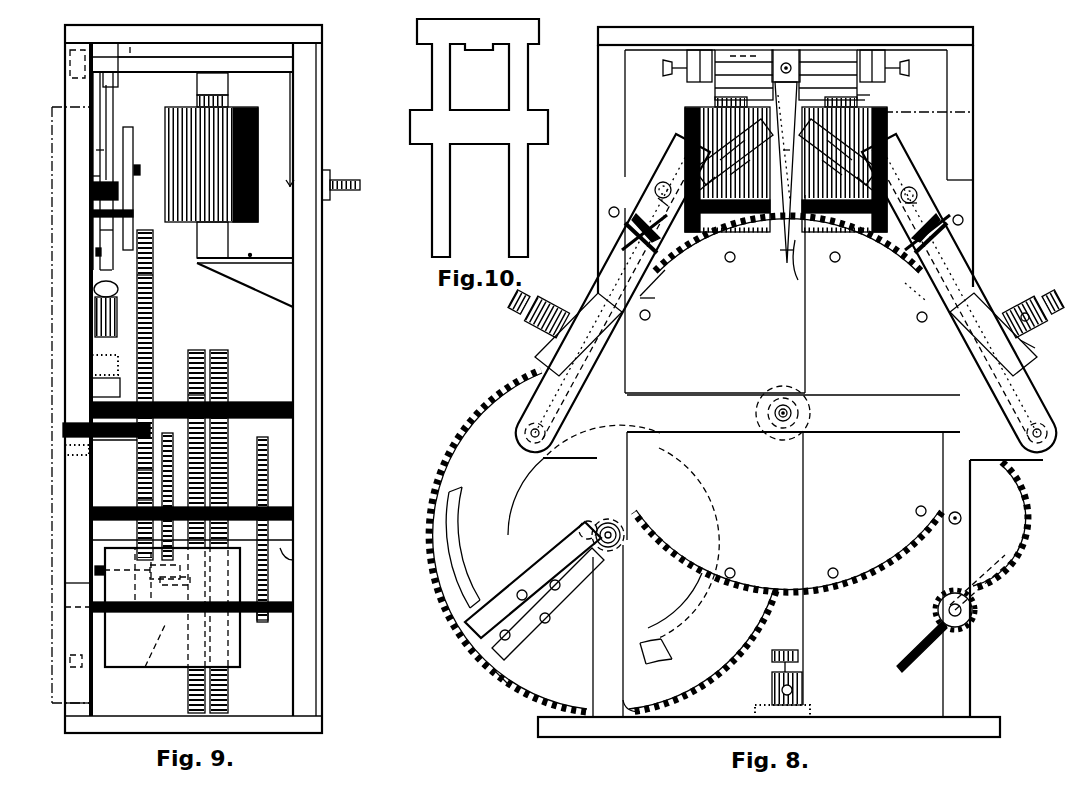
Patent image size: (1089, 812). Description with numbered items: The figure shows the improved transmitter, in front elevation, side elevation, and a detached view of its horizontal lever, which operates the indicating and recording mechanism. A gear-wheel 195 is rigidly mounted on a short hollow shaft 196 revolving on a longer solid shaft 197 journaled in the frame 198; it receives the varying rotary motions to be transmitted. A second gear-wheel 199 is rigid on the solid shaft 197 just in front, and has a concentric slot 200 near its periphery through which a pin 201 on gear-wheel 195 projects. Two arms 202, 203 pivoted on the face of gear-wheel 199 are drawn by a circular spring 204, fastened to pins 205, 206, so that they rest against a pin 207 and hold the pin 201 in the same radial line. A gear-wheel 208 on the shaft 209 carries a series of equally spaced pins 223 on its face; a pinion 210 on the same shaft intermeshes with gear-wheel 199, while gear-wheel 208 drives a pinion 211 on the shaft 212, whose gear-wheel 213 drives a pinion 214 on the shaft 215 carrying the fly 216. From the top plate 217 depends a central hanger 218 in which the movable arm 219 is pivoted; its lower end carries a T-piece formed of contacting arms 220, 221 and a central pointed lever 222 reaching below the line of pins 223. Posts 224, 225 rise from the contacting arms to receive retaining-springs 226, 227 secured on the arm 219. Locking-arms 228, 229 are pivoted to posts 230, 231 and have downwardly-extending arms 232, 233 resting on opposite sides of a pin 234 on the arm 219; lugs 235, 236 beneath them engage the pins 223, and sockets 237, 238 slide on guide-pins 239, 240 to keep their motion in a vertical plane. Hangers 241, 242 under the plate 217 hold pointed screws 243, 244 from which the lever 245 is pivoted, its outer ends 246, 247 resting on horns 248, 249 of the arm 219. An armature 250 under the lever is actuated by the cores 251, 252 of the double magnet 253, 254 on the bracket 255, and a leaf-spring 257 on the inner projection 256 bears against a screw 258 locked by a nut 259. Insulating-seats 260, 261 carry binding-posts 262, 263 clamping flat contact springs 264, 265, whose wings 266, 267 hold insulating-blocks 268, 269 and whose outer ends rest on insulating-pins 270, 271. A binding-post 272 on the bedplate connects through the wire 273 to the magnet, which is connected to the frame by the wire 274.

In FIG. 9, the gear-wheel 195 is at (229, 366).
In FIG. 9, the short hollow shaft 196 is at (293, 560).
In FIG. 9, the solid shaft 197 is at (100, 545).
In FIG. 9, the frame 198 is at (316, 535).
In FIG. 8, the frame 198 is at (960, 185).
In FIG. 9, the gear-wheel 199 is at (188, 366).
In FIG. 8, the gear-wheel 199 is at (427, 590).
In FIG. 8, the concentric slot 200 is at (460, 515).
In FIG. 9, the pin 201 is at (144, 652).
In FIG. 8, the pin 201 is at (490, 655).
In FIG. 8, the arm 202 is at (500, 680).
In FIG. 8, the arm 203 is at (480, 640).
In FIG. 9, the circular spring 204 is at (162, 437).
In FIG. 8, the circular spring 204 is at (508, 537).
In FIG. 8, the pin 205 is at (545, 622).
In FIG. 8, the pin 206 is at (518, 594).
In FIG. 9, the pin 207 is at (240, 563).
In FIG. 8, the pin 207 is at (552, 580).
In FIG. 9, the gear-wheel 208 is at (155, 280).
In FIG. 8, the gear-wheel 208 is at (788, 544).
In FIG. 9, the shaft 209 is at (242, 404).
In FIG. 8, the shaft 209 is at (786, 425).
In FIG. 9, the pinion 210 is at (188, 393).
In FIG. 8, the pinion 210 is at (775, 392).
In FIG. 9, the pinion 211 is at (137, 505).
In FIG. 8, the pinion 211 is at (962, 518).
In FIG. 8, the shaft 212 is at (960, 522).
In FIG. 9, the gear-wheel 213 is at (257, 488).
In FIG. 8, the gear-wheel 213 is at (1000, 525).
In FIG. 9, the pinion 214 is at (255, 622).
In FIG. 8, the pinion 214 is at (975, 600).
In FIG. 9, the shaft 215 is at (293, 605).
In FIG. 8, the shaft 215 is at (935, 610).
In FIG. 9, the fly 216 is at (172, 607).
In FIG. 8, the fly 216 is at (906, 670).
In FIG. 9, the top plate 217 is at (193, 35).
In FIG. 8, the top plate 217 is at (970, 38).
In FIG. 9, the central hanger 218 is at (66, 57).
In FIG. 8, the central hanger 218 is at (782, 50).
In FIG. 9, the movable arm 219 is at (121, 90).
In FIG. 8, the movable arm 219 is at (800, 80).
In FIG. 8, the contacting arm 220 is at (705, 180).
In FIG. 8, the contacting arm 221 is at (887, 165).
In FIG. 8, the central pointed lever 222 is at (786, 240).
In FIG. 9, the pins 223 is at (97, 252).
In FIG. 8, the pins 223 is at (718, 262).
In FIG. 8, the post 224 is at (740, 150).
In FIG. 9, the post 225 is at (100, 155).
In FIG. 8, the post 225 is at (887, 145).
In FIG. 8, the retaining-spring 226 is at (760, 130).
In FIG. 9, the retaining-spring 227 is at (104, 127).
In FIG. 8, the retaining-spring 227 is at (887, 128).
In FIG. 8, the locking-arm 228 is at (660, 292).
In FIG. 9, the locking-arm 229 is at (133, 140).
In FIG. 8, the locking-arm 229 is at (915, 288).
In FIG. 8, the post 230 is at (515, 418).
In FIG. 9, the post 231 is at (98, 442).
In FIG. 8, the downwardly-extending arm 232 is at (765, 238).
In FIG. 8, the downwardly-extending arm 233 is at (798, 262).
In FIG. 9, the pin 234 is at (139, 168).
In FIG. 8, the pin 234 is at (887, 175).
In FIG. 8, the lug 235 is at (650, 300).
In FIG. 8, the lug 236 is at (918, 315).
In FIG. 9, the socket 237 is at (154, 255).
In FIG. 8, the socket 237 is at (675, 260).
In FIG. 8, the socket 238 is at (912, 262).
In FIG. 8, the guide-pin 239 is at (625, 234).
In FIG. 9, the guide-pin 240 is at (134, 214).
In FIG. 8, the guide-pin 240 is at (935, 240).
In FIG. 8, the hanger 241 is at (690, 56).
In FIG. 8, the hanger 242 is at (890, 57).
In FIG. 8, the pointed screw 243 is at (664, 72).
In FIG. 8, the pointed screw 244 is at (902, 72).
In FIG. 9, the lever 245 is at (205, 64).
In FIG. 10, the lever 245 is at (529, 92).
In FIG. 10, the outer end of lever 246 is at (432, 256).
In FIG. 10, the outer end of lever 247 is at (526, 256).
In FIG. 8, the horn 248 is at (715, 90).
In FIG. 9, the horn 249 is at (120, 79).
In FIG. 8, the horn 249 is at (890, 97).
In FIG. 9, the armature 250 is at (229, 80).
In FIG. 10, the armature 250 is at (549, 141).
In FIG. 8, the armature 250 is at (860, 104).
In FIG. 8, the core 251 is at (715, 100).
In FIG. 9, the core 252 is at (229, 99).
In FIG. 8, the core 252 is at (887, 118).
In FIG. 8, the double magnet 253 is at (735, 165).
In FIG. 9, the double magnet 254 is at (172, 178).
In FIG. 8, the double magnet 254 is at (883, 153).
In FIG. 9, the bracket 255 is at (245, 285).
In FIG. 10, the inner projection 256 is at (492, 56).
In FIG. 9, the leaf-spring 257 is at (290, 140).
In FIG. 9, the screw 258 is at (342, 178).
In FIG. 9, the nut 259 is at (331, 198).
In FIG. 8, the insulating-seat 260 is at (548, 340).
In FIG. 9, the insulating-seat 261 is at (106, 387).
In FIG. 8, the insulating-seat 261 is at (1030, 346).
In FIG. 8, the binding-post 262 is at (525, 320).
In FIG. 9, the binding-post 263 is at (95, 320).
In FIG. 8, the binding-post 263 is at (1060, 326).
In FIG. 8, the contact spring 264 is at (608, 212).
In FIG. 9, the contact spring 265 is at (96, 176).
In FIG. 8, the contact spring 265 is at (964, 220).
In FIG. 8, the wing 266 is at (646, 228).
In FIG. 8, the wing 267 is at (905, 218).
In FIG. 8, the insulating-block 268 is at (648, 189).
In FIG. 8, the insulating-block 269 is at (917, 193).
In FIG. 8, the insulating-pin 270 is at (660, 203).
In FIG. 9, the insulating-pin 271 is at (92, 190).
In FIG. 8, the insulating-pin 271 is at (917, 202).
In FIG. 9, the binding-post 272 is at (91, 690).
In FIG. 8, the binding-post 272 is at (770, 690).
In FIG. 9, the wire 273 is at (54, 108).
In FIG. 8, the wire 273 is at (960, 112).
In FIG. 9, the wire 274 is at (246, 244).